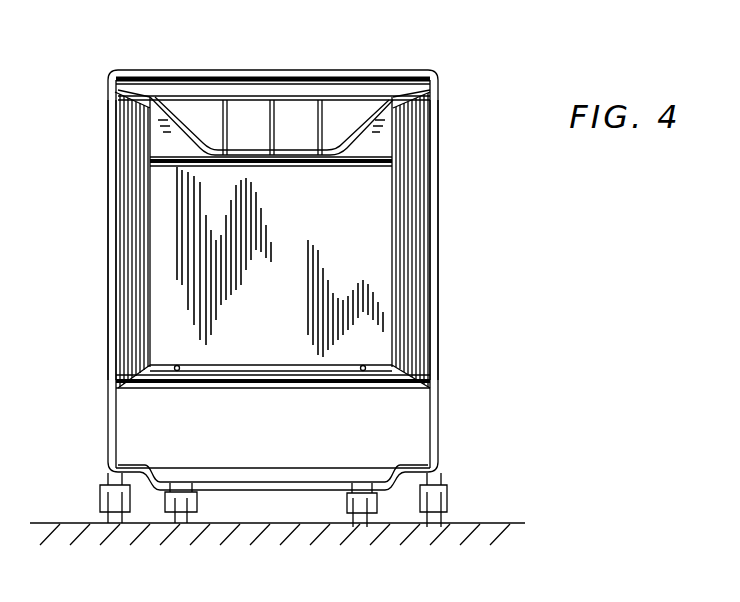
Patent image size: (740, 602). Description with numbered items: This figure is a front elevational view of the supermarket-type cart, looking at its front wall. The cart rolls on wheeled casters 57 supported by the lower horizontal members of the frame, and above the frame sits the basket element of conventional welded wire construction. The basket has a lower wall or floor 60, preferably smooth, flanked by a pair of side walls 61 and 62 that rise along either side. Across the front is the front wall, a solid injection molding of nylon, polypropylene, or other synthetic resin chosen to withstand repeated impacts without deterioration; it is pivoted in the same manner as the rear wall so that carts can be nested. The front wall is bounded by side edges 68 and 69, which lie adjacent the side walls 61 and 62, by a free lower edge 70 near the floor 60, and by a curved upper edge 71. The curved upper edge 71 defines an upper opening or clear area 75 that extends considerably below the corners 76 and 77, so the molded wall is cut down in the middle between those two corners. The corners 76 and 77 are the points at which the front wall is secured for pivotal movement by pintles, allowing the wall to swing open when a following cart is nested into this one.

The wheeled casters 57 is at (447, 505).
The lower wall or floor 60 is at (313, 390).
The side wall 61 is at (128, 270).
The side wall 62 is at (420, 278).
The side edge 68 is at (152, 212).
The side edge 69 is at (397, 210).
The free lower edge 70 is at (204, 388).
The curved upper edge 71 is at (252, 153).
The upper opening or clear area 75 is at (283, 117).
The corner 76 is at (150, 98).
The corner 77 is at (398, 100).